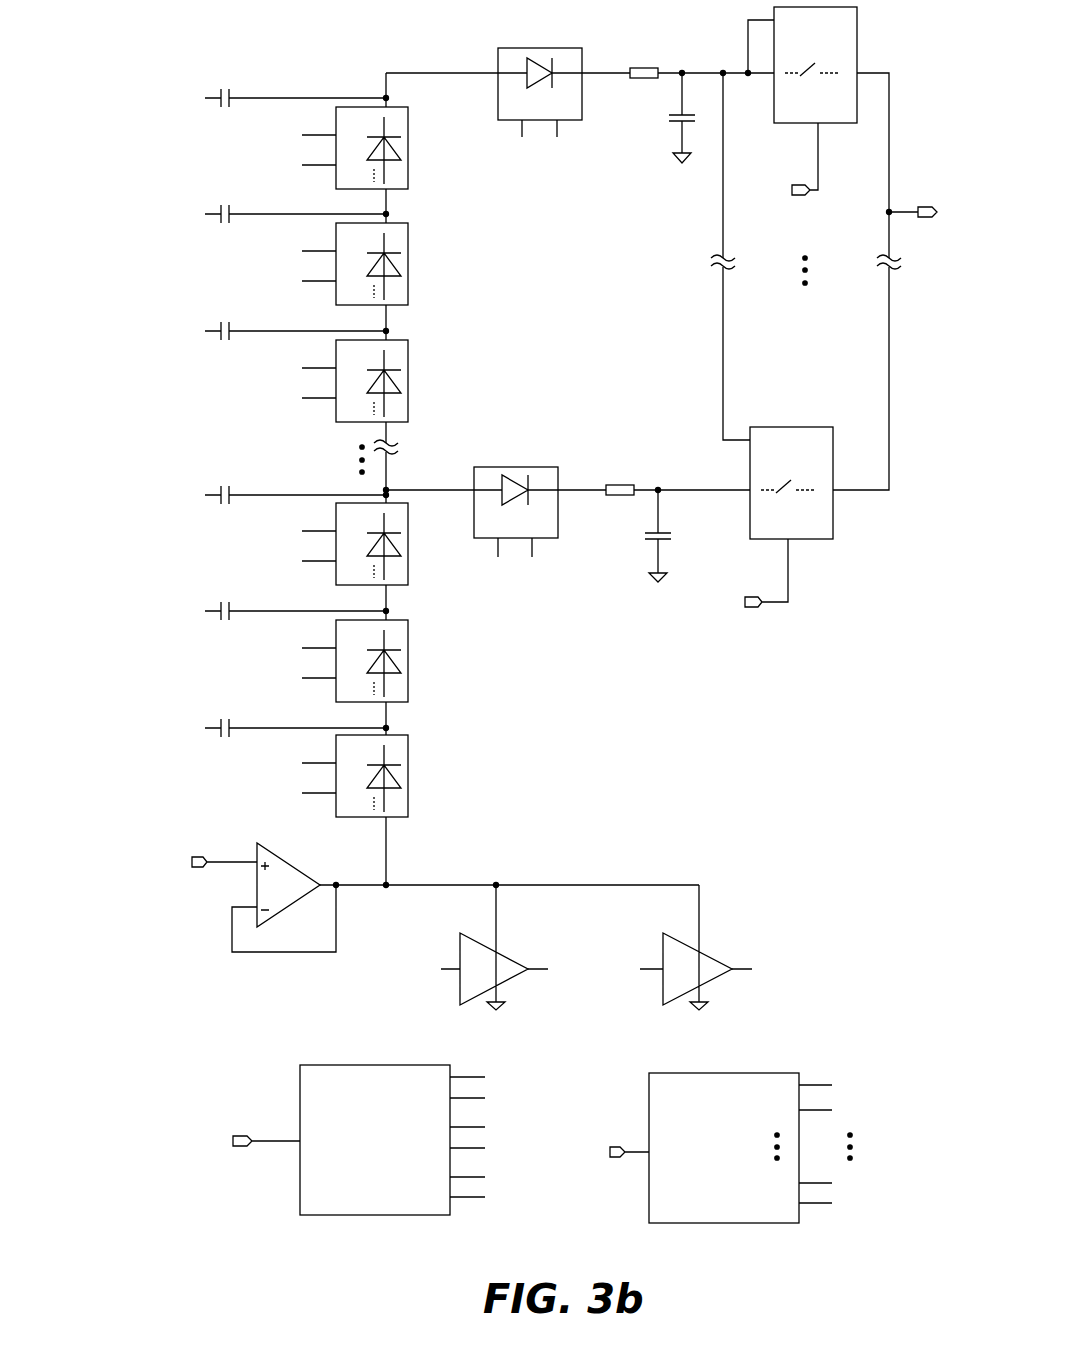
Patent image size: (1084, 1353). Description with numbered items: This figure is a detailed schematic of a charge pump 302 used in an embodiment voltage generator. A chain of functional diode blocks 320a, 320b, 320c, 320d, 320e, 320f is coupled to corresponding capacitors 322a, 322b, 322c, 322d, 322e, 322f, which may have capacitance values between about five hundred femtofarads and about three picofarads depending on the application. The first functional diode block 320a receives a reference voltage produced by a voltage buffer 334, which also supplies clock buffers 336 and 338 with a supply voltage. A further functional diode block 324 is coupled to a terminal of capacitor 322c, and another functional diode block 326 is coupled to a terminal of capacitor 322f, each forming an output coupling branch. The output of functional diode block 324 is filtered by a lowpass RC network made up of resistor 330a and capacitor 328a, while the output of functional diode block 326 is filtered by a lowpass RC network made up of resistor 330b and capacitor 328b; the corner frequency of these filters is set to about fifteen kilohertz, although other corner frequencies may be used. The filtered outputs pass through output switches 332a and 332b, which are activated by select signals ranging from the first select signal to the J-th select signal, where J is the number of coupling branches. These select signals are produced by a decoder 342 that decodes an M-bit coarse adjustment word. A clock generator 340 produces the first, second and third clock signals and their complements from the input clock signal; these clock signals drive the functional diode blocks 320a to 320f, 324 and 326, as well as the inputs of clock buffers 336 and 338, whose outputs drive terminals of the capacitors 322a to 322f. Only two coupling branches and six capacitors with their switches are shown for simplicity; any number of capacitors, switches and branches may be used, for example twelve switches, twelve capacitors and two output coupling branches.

The bias generation circuit 302 is at (138, 38).
The functional diode block 320a is at (408, 768).
The functional diode block 320b is at (408, 653).
The functional diode block 320c is at (408, 536).
The functional diode block 320d is at (408, 373).
The functional diode block 320e is at (408, 256).
The functional diode block 320f is at (408, 140).
The capacitor 322a is at (231, 720).
The capacitor 322b is at (231, 603).
The capacitor 322c is at (231, 487).
The capacitor 322d is at (231, 323).
The capacitor 322e is at (231, 206).
The capacitor 322f is at (231, 90).
The functional diode block 324 is at (498, 467).
The functional diode block 326 is at (522, 48).
The capacitor 328a is at (645, 545).
The capacitor 328b is at (669, 127).
The resistor 330a is at (616, 485).
The resistor 330b is at (640, 68).
The output switch 332a is at (790, 427).
The output switch 332b is at (857, 42).
The voltage buffer 334 is at (255, 845).
The clock buffer 336 is at (506, 954).
The clock buffer 338 is at (710, 954).
The clock generator 340 is at (380, 1065).
The decoder 342 is at (697, 1073).